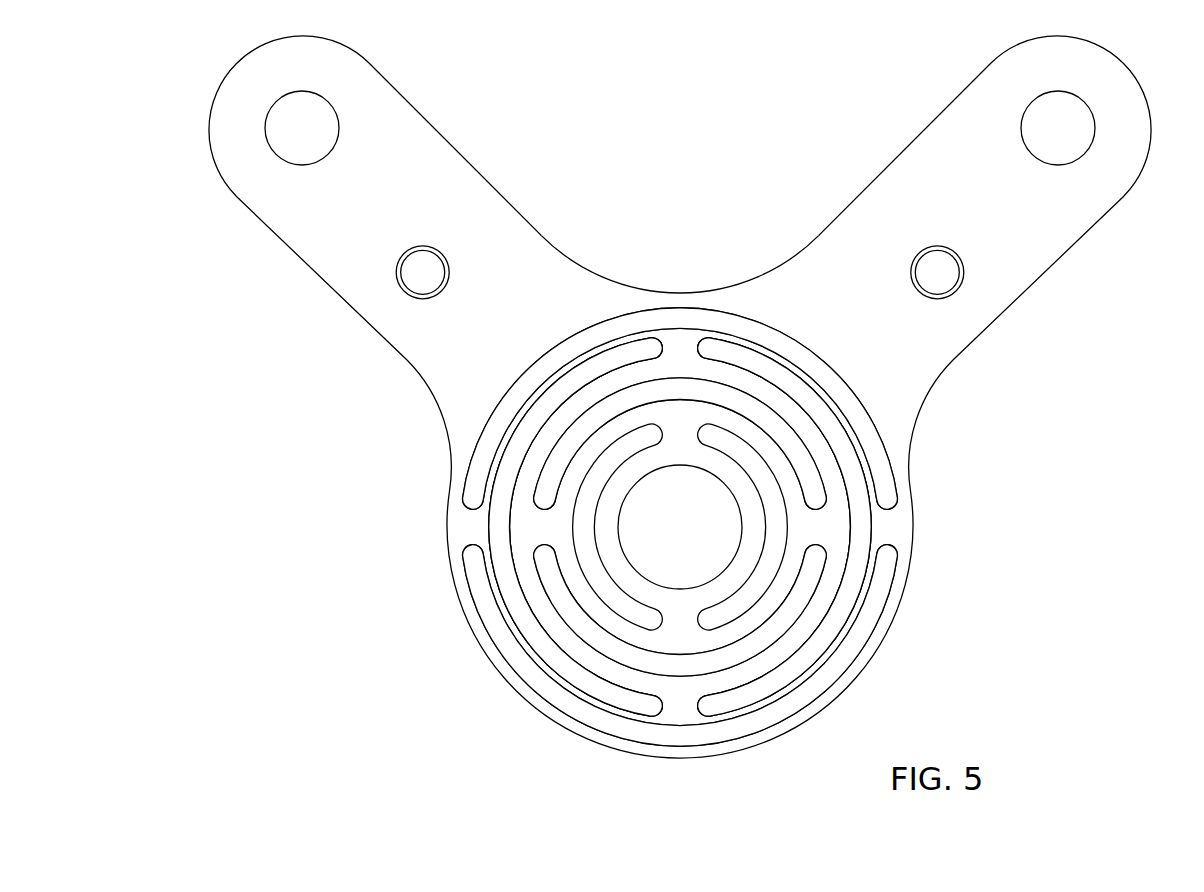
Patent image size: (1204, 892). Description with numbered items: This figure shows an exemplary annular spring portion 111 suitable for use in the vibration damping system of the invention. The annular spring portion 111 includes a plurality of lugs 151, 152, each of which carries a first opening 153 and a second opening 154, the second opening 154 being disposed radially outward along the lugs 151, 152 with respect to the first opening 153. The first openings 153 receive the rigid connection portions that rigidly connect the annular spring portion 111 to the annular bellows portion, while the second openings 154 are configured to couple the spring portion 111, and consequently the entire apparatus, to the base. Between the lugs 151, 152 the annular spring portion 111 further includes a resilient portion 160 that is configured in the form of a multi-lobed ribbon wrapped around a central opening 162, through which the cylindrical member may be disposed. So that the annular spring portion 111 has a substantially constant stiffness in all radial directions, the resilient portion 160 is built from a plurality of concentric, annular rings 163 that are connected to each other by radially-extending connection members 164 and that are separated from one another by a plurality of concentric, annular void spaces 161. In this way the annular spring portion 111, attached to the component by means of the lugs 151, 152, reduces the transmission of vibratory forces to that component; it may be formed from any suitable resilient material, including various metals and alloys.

The annular spring portion 111 is at (442, 687).
The lug 151 is at (393, 84).
The lug 152 is at (967, 84).
The first opening 153 is at (414, 282).
The second opening 154 is at (292, 144).
The resilient portion 160 is at (912, 529).
The annular void space 161 is at (888, 463).
The central opening 162 is at (700, 524).
The annular ring 163 is at (612, 381).
The connection member 164 is at (682, 343).